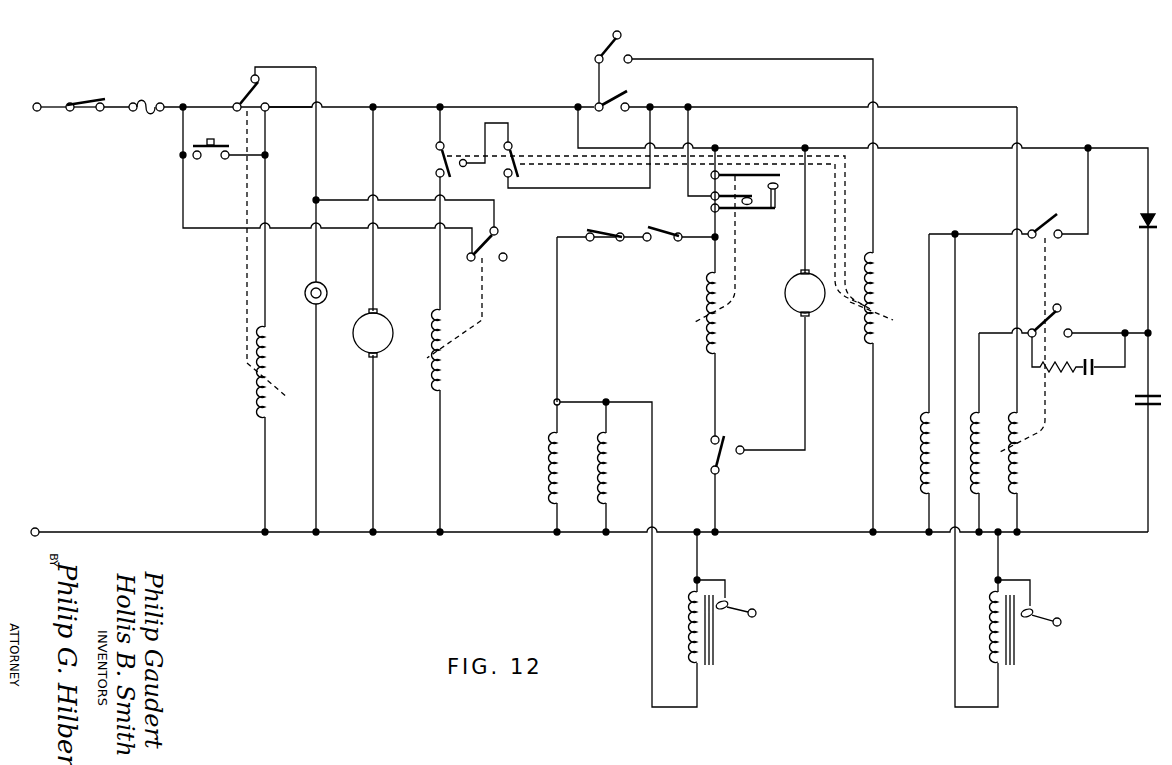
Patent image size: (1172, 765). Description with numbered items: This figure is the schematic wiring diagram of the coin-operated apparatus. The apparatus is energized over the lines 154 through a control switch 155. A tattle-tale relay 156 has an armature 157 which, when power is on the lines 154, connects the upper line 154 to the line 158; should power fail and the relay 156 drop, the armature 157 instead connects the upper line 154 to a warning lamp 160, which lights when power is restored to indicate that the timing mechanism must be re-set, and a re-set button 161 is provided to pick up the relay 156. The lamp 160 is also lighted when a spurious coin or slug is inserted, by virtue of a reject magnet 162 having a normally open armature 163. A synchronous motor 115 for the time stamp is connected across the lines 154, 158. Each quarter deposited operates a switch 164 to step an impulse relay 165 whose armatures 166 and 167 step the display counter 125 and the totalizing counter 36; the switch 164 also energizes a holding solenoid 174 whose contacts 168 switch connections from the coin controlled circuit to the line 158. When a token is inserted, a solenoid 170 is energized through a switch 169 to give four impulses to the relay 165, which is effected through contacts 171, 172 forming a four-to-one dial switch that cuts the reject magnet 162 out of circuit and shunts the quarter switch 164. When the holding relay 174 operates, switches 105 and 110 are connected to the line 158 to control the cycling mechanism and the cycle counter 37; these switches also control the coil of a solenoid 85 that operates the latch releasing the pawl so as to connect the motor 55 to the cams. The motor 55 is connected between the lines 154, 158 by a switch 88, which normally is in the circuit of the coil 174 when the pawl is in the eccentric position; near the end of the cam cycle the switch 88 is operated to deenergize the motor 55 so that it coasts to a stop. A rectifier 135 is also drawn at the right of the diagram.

The lines 154 is at (53, 104).
The control switch 155 is at (82, 102).
The armature 157 is at (244, 88).
The re-set button 161 is at (207, 138).
The tattle-tale relay 156 is at (255, 387).
The warning lamp 160 is at (325, 285).
The synchronous motor 115 is at (384, 324).
The reject magnet 162 is at (449, 362).
The armature 163 is at (494, 253).
The contacts 171 is at (447, 149).
The contacts 172 is at (515, 149).
The line 158 is at (517, 106).
The switch 169 is at (598, 55).
The switch 164 is at (612, 100).
The switch 105 is at (613, 228).
The switch 110 is at (678, 222).
The contacts 168 is at (790, 197).
The holding solenoid 174 is at (726, 322).
The motor 55 is at (823, 307).
The solenoid 170 is at (880, 294).
The armature 167 is at (1044, 213).
The rectifier 135 is at (1143, 222).
The armature 166 is at (1062, 320).
The display counter 125 is at (993, 427).
The impulse relay 165 is at (1027, 470).
The totalizing counter 36 is at (924, 466).
The solenoid 85 is at (550, 472).
The cycle counter 37 is at (614, 450).
The switch 88 is at (727, 456).